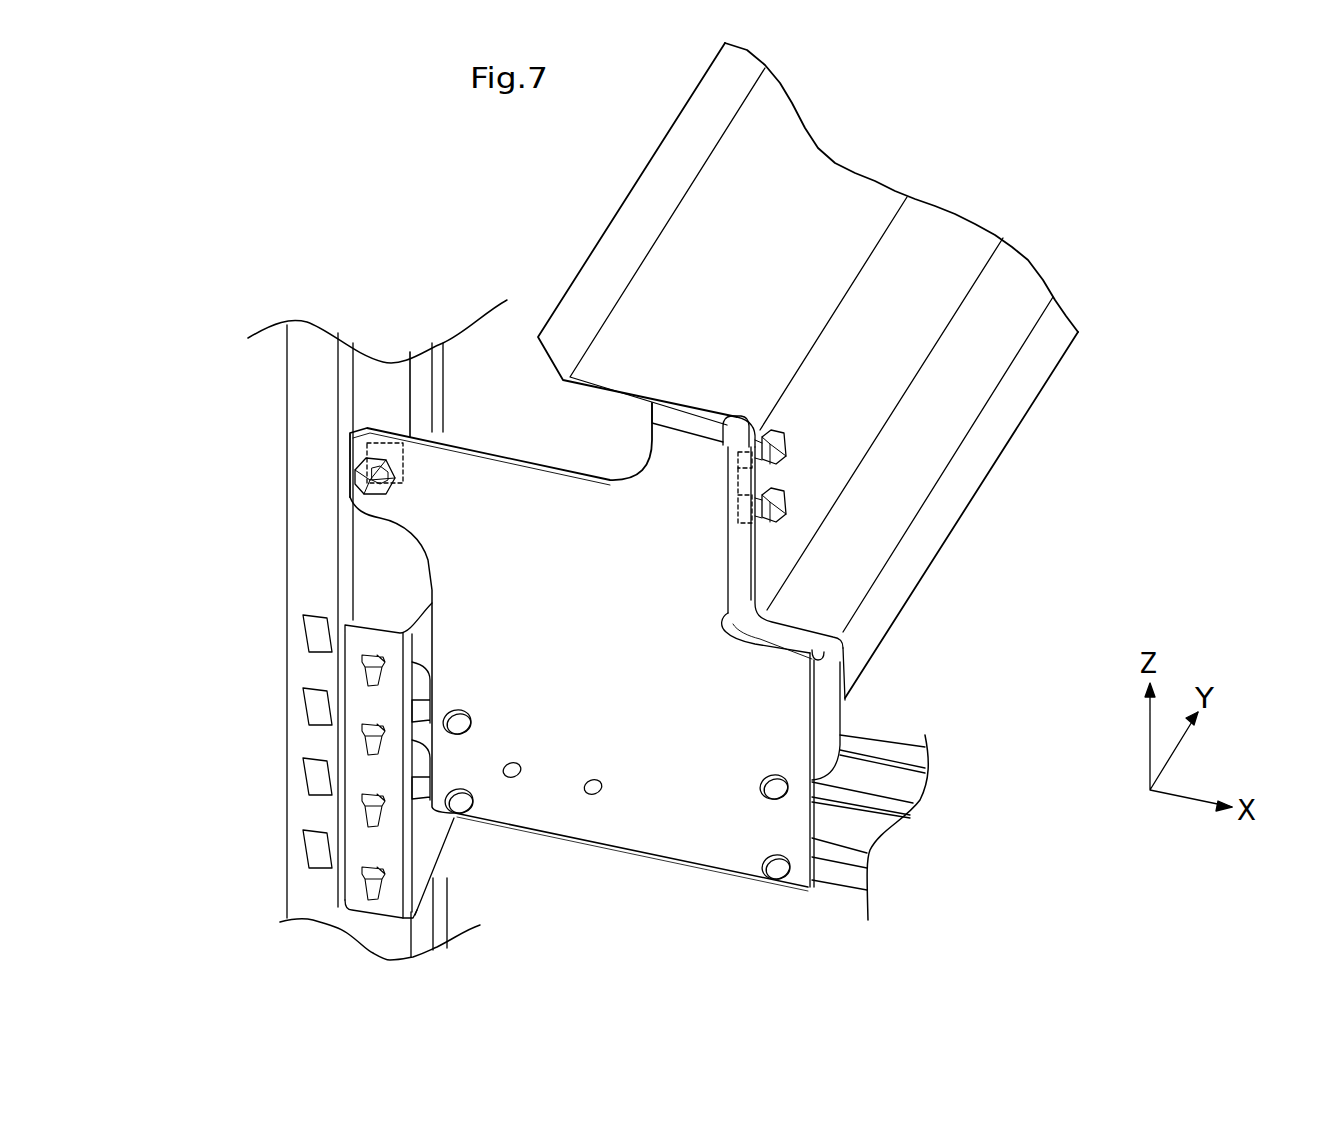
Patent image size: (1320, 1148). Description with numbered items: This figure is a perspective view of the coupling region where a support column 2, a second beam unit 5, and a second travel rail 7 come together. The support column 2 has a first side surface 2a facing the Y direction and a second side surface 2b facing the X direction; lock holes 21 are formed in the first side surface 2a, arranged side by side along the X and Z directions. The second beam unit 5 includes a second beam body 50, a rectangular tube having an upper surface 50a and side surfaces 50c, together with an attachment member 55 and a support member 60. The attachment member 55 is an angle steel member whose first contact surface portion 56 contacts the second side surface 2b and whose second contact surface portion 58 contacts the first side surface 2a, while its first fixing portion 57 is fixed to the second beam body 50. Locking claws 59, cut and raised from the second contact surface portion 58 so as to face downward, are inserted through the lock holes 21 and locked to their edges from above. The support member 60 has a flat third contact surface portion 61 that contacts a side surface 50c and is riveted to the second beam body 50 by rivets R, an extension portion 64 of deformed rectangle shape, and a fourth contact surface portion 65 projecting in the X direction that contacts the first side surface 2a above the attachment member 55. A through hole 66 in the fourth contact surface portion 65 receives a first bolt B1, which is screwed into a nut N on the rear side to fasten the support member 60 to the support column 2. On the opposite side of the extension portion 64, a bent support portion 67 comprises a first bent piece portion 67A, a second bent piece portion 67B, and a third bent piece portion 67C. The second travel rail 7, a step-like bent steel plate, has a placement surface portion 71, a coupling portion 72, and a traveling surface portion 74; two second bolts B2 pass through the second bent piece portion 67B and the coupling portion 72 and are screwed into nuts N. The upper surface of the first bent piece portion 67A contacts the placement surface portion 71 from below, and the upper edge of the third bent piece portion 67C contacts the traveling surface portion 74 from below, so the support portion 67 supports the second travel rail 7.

The support column 2 is at (340, 618).
The first side surface 2a is at (295, 583).
The second side surface 2b is at (422, 368).
The second beam unit 5 is at (579, 650).
The second travel rail 7 is at (819, 370).
The lock holes 21 is at (368, 877).
The second beam body 50 is at (912, 795).
The upper surface 50a is at (915, 787).
The side surfaces 50c is at (830, 877).
The attachment member 55 is at (354, 768).
The first contact surface portion 56 is at (447, 870).
The first fixing portion 57 is at (415, 675).
The second contact surface portion 58 is at (370, 783).
The locking claws 59 is at (362, 742).
The support member 60 is at (558, 838).
The third contact surface portion 61 is at (635, 823).
The extension portion 64 is at (590, 635).
The fourth contact surface portion 65 is at (355, 505).
The through hole 66 is at (377, 433).
The support portion 67 is at (787, 643).
The first bent piece portion 67A is at (667, 408).
The second bent piece portion 67B is at (740, 550).
The third bent piece portion 67C is at (830, 683).
The placement surface portion 71 is at (787, 125).
The coupling portion 72 is at (952, 218).
The traveling surface portion 74 is at (1020, 280).
The first bolt B1 is at (355, 477).
The second bolts B2 is at (785, 497).
The nut N is at (737, 467).
The rivets R is at (460, 802).